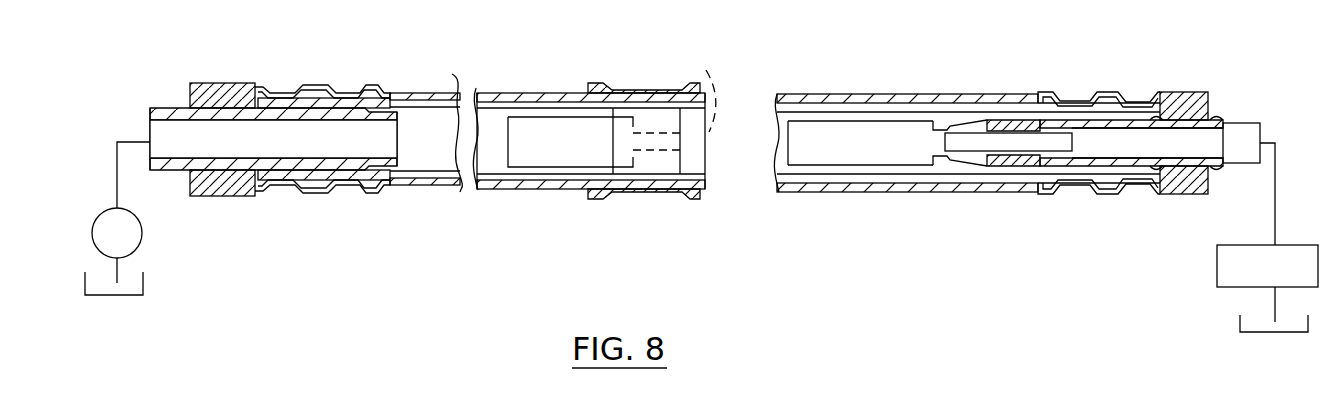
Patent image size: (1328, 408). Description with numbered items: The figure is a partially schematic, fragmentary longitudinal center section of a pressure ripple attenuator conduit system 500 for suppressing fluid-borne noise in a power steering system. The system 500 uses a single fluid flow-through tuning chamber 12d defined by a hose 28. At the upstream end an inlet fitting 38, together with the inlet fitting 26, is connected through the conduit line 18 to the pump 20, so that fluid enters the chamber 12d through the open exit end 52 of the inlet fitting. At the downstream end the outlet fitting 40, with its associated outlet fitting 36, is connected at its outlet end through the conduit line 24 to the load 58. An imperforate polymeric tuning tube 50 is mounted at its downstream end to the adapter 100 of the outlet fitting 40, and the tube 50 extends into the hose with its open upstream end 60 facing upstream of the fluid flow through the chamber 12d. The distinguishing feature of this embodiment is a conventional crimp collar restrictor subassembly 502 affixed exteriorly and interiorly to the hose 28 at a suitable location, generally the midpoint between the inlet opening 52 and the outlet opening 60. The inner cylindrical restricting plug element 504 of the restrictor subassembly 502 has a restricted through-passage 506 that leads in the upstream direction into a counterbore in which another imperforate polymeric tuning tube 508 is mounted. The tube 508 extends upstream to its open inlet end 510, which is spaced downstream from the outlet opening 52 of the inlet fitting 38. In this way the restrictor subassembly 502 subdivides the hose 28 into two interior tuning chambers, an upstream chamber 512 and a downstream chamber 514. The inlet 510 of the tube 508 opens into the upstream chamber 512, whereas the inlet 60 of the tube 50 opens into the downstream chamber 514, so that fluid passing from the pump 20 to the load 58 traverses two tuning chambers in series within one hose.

The system 500 is at (139, 64).
The inlet fitting 26 is at (173, 107).
The tuning chamber 12d is at (141, 100).
The conduit line 18 is at (115, 177).
The pump 20 is at (144, 239).
The crimp collar shell fitting 38 is at (316, 197).
The open exit end 52 is at (398, 128).
The hose 28 is at (487, 194).
The upstream chamber 512 is at (448, 126).
The open inlet end 510 is at (508, 138).
The inner cylindrical restricting plug element 504 is at (633, 113).
The crimp collar restrictor subassembly 502 is at (650, 84).
The restricted through-passage 506 is at (695, 92).
The tuning tube 508 is at (562, 168).
The open upstream end 60 is at (788, 141).
The downstream chamber 514 is at (776, 160).
The tuning tube 50 is at (820, 170).
The adapter 100 is at (990, 176).
The crimp collar shell fitting 40 is at (1106, 201).
The outlet fitting 36 is at (1238, 118).
The conduit line 24 is at (1272, 204).
The load 58 is at (1212, 264).